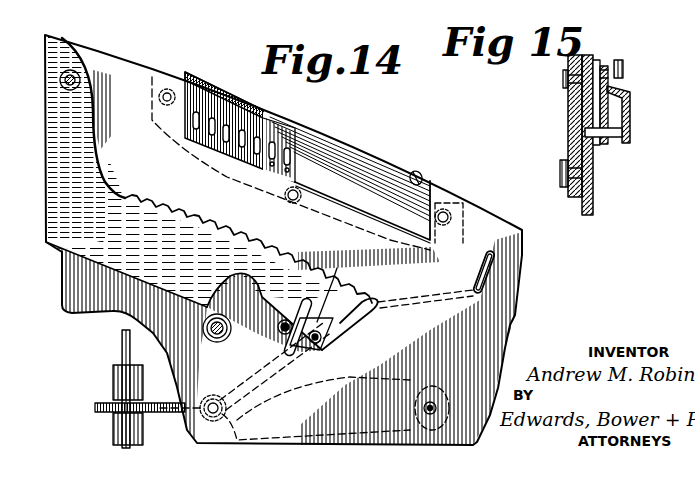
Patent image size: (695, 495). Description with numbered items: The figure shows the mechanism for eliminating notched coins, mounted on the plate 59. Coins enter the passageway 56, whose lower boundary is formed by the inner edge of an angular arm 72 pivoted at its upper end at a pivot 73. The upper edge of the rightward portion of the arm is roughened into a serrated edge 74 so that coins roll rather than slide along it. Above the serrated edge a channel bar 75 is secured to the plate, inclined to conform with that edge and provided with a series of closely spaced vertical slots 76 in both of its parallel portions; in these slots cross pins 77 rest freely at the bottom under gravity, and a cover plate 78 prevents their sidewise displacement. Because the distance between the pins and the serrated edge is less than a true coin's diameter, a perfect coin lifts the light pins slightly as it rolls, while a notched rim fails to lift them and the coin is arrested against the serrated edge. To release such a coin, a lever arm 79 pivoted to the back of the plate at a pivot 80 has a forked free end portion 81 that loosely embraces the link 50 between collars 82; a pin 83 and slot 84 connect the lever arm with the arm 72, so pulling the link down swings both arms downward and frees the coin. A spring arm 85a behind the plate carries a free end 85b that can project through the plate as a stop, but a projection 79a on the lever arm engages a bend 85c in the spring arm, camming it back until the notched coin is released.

In FIG. 14, the link 50 is at (121, 346).
In FIG. 14, the passageway 56 is at (128, 77).
In FIG. 14, the plate 59 is at (93, 58).
In FIG. 15, the plate 59 is at (569, 105).
In FIG. 14, the angular arm 72 is at (45, 162).
In FIG. 14, the pivot 73 is at (60, 80).
In FIG. 14, the serrated edge 74 is at (242, 247).
In FIG. 14, the channel bar 75 is at (216, 131).
In FIG. 15, the channel bar 75 is at (597, 56).
In FIG. 14, the vertical slots 76 is at (209, 130).
In FIG. 14, the cross pins 77 is at (258, 160).
In FIG. 15, the cross pins 77 is at (617, 138).
In FIG. 14, the cover plate 78 is at (332, 158).
In FIG. 15, the cover plate 78 is at (632, 96).
In FIG. 14, the lever arm 79 is at (404, 388).
In FIG. 14, the projection 79a is at (335, 282).
In FIG. 14, the pivot 80 is at (443, 396).
In FIG. 14, the forked free end portion 81 is at (95, 407).
In FIG. 14, the collars 82 is at (112, 377).
In FIG. 14, the pin 83 is at (318, 352).
In FIG. 14, the slot 84 is at (288, 347).
In FIG. 14, the spring arm 85a is at (266, 360).
In FIG. 14, the free end of spring arm 85b is at (478, 268).
In FIG. 14, the bend 85c is at (356, 332).